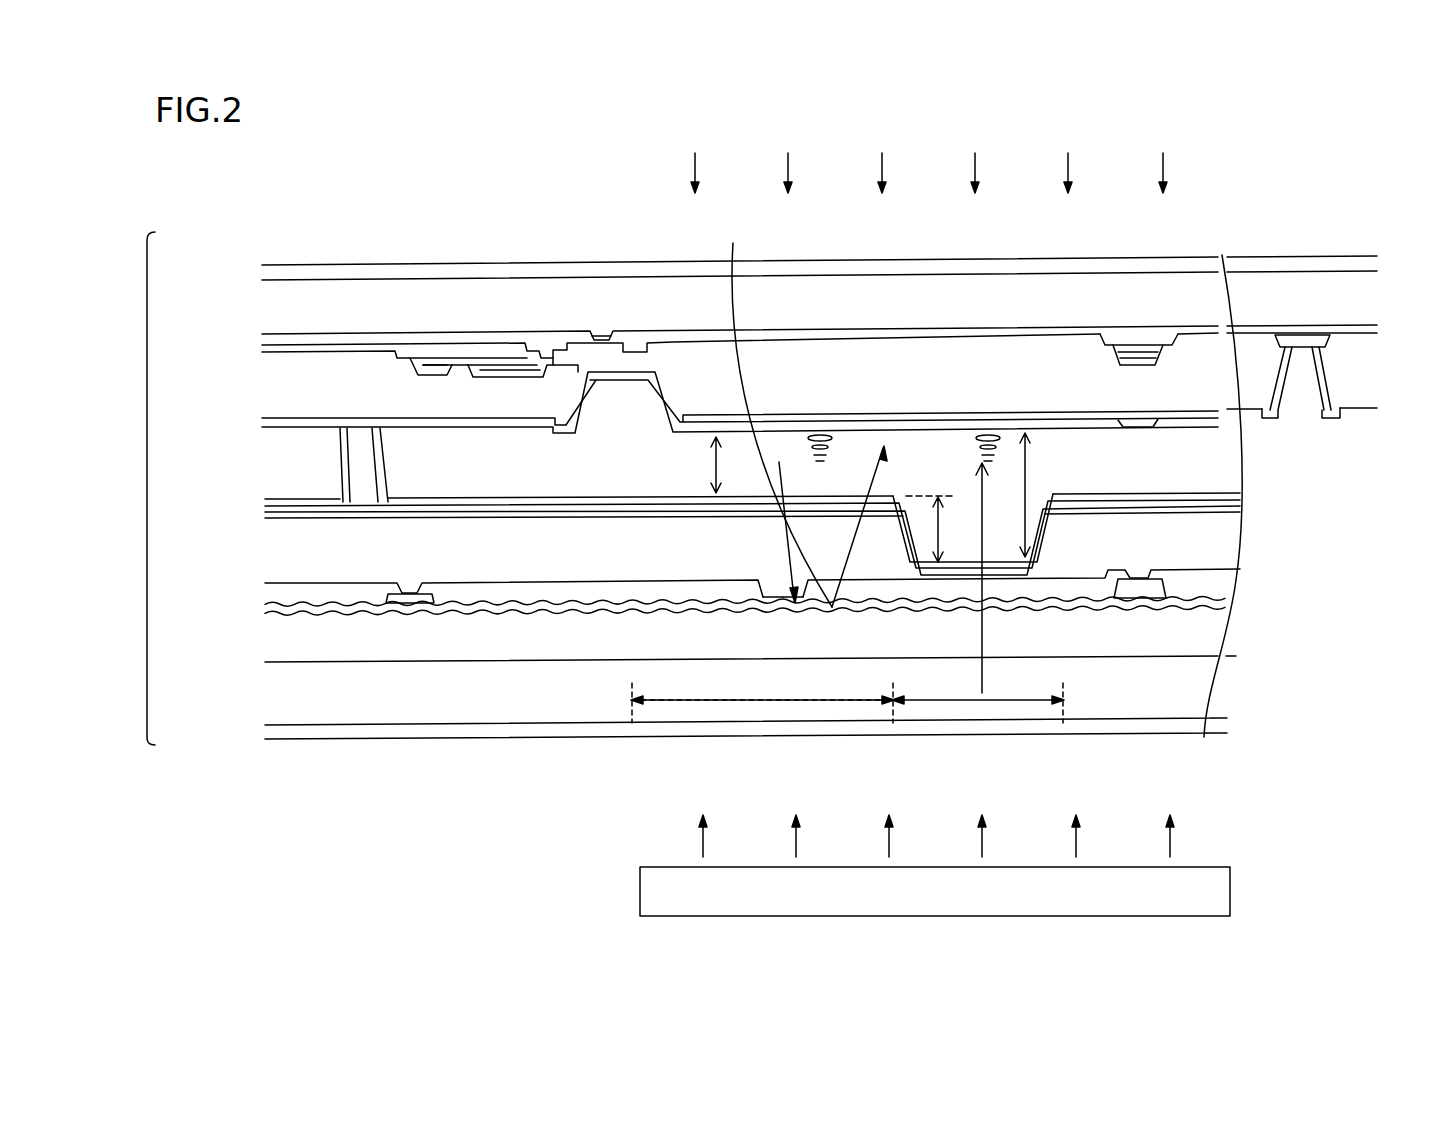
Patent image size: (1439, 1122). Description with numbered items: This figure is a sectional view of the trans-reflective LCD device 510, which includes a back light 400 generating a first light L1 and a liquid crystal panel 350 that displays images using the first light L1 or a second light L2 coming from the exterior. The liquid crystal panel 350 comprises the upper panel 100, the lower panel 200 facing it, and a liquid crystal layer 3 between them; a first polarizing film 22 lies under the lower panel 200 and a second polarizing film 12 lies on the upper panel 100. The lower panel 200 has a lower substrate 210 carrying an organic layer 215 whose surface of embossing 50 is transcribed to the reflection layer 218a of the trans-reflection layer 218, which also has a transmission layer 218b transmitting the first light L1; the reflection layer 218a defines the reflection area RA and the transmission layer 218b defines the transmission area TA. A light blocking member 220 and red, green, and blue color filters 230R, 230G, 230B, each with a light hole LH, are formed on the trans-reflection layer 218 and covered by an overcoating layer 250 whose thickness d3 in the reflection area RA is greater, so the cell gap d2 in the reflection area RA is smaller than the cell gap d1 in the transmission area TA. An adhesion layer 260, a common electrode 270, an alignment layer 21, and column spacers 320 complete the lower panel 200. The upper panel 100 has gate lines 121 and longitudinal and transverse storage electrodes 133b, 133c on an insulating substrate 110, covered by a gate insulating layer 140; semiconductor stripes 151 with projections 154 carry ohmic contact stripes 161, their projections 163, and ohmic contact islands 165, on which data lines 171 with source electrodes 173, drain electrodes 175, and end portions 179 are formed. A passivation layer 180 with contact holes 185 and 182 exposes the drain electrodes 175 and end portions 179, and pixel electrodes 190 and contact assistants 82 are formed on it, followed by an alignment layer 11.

The upper panel 100 is at (228, 263).
The insulating substrate 110 is at (275, 308).
The second polarizing film 12 is at (287, 275).
The gate line 121 is at (331, 345).
The gate insulating layer 140 is at (265, 348).
The projection of semiconductor stripe 154 is at (437, 360).
The projection of ohmic contact stripe 163 is at (446, 360).
The ohmic contact island 165 is at (487, 360).
The source electrode 173 is at (396, 355).
The drain electrode 175 is at (515, 365).
The transverse storage electrode 133c is at (604, 338).
The longitudinal storage electrode 133b is at (1160, 330).
The semiconductor stripe 151 is at (1140, 358).
The ohmic contact stripe 161 is at (1130, 350).
The data line 171 is at (1125, 357).
The end portion of data line 179 is at (1318, 343).
The passivation layer 180 is at (275, 386).
The contact hole 182 is at (1275, 407).
The contact assistant 82 is at (1333, 420).
The contact hole 185 is at (582, 378).
The pixel electrode 190 is at (778, 416).
The alignment layer 11 is at (268, 427).
The liquid crystal layer 3 is at (236, 462).
The column spacer 320 is at (362, 447).
The alignment layer 21 is at (340, 487).
The common electrode 270 is at (275, 511).
The adhesion layer 260 is at (283, 523).
The overcoating layer 250 is at (278, 566).
The light blocking member 220 is at (1157, 588).
The trans-reflection layer 218 is at (912, 772).
The reflection layer 218a is at (830, 612).
The transmission layer 218b is at (930, 612).
The organic layer 215 is at (278, 641).
The lower substrate 210 is at (278, 690).
The lower panel 200 is at (235, 728).
The red color filter 230R is at (308, 598).
The green color filter 230G is at (517, 598).
The blue color filter 230B is at (1208, 590).
The first polarizing film 22 is at (375, 738).
The embossing 50 is at (575, 618).
The liquid crystal panel 350 is at (147, 490).
The trans-reflective LCD device 510 is at (437, 172).
The back light 400 is at (1230, 893).
The first light L1 is at (1200, 836).
The second light L2 is at (1170, 151).
The light hole LH is at (777, 411).
The cell gap d1 is at (1037, 495).
The cell gap d2 is at (704, 465).
The thickness of overcoating layer d3 is at (937, 529).
The reflection area RA is at (762, 698).
The transmission area TA is at (978, 698).